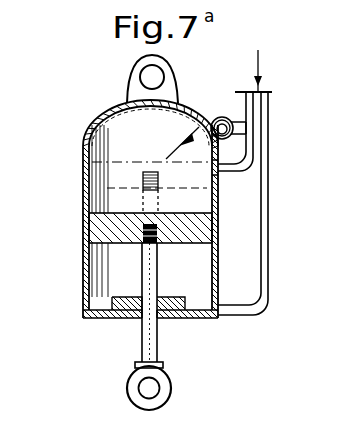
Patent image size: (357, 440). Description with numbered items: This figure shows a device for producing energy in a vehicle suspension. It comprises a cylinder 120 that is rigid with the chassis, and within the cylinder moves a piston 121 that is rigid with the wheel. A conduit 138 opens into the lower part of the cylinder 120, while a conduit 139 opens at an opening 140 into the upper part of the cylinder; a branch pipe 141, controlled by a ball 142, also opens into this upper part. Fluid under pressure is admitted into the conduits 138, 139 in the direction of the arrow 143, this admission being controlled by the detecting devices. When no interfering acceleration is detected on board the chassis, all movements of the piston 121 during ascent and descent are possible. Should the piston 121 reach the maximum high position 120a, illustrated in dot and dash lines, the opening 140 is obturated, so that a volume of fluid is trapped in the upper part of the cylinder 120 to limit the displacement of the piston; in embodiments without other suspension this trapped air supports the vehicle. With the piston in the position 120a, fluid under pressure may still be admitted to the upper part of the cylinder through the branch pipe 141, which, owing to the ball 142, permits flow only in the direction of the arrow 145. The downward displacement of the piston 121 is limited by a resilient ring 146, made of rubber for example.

The cylinder 120 is at (87, 222).
The maximum high position 120a is at (91, 148).
The piston 121 is at (125, 213).
The conduit 138 is at (266, 232).
The conduit 139 is at (250, 116).
The opening 140 is at (212, 166).
The branch pipe 141 is at (215, 117).
The ball 142 is at (227, 118).
The arrow 143 is at (259, 82).
The arrow 145 is at (190, 136).
The resilient ring 146 is at (84, 307).